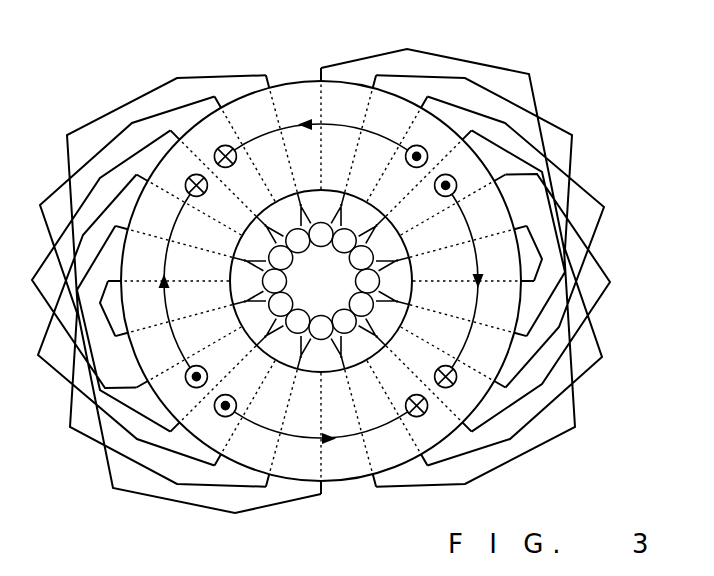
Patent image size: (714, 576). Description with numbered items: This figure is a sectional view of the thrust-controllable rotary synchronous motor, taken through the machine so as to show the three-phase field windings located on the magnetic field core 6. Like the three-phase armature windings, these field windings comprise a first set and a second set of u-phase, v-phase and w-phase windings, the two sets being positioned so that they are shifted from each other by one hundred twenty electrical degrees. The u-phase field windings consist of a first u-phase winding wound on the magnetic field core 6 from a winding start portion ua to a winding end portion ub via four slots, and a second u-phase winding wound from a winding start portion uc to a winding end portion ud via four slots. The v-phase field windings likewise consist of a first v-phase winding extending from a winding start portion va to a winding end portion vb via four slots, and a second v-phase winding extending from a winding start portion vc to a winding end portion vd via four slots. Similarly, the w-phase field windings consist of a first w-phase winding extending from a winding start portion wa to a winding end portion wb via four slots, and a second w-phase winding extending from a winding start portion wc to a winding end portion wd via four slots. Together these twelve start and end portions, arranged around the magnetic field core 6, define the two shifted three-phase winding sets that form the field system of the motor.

The magnetic field core 6 is at (298, 104).
The winding start portion ua is at (321, 235).
The winding end portion wb is at (344, 241).
The winding start portion va is at (361, 258).
The winding end portion ub is at (368, 281).
The winding start portion wa is at (361, 304).
The winding end portion vb is at (344, 321).
The winding start portion uc is at (321, 328).
The winding end portion wd is at (298, 321).
The winding start portion vc is at (281, 304).
The winding end portion ud is at (275, 281).
The winding start portion wc is at (281, 258).
The winding end portion vd is at (298, 241).